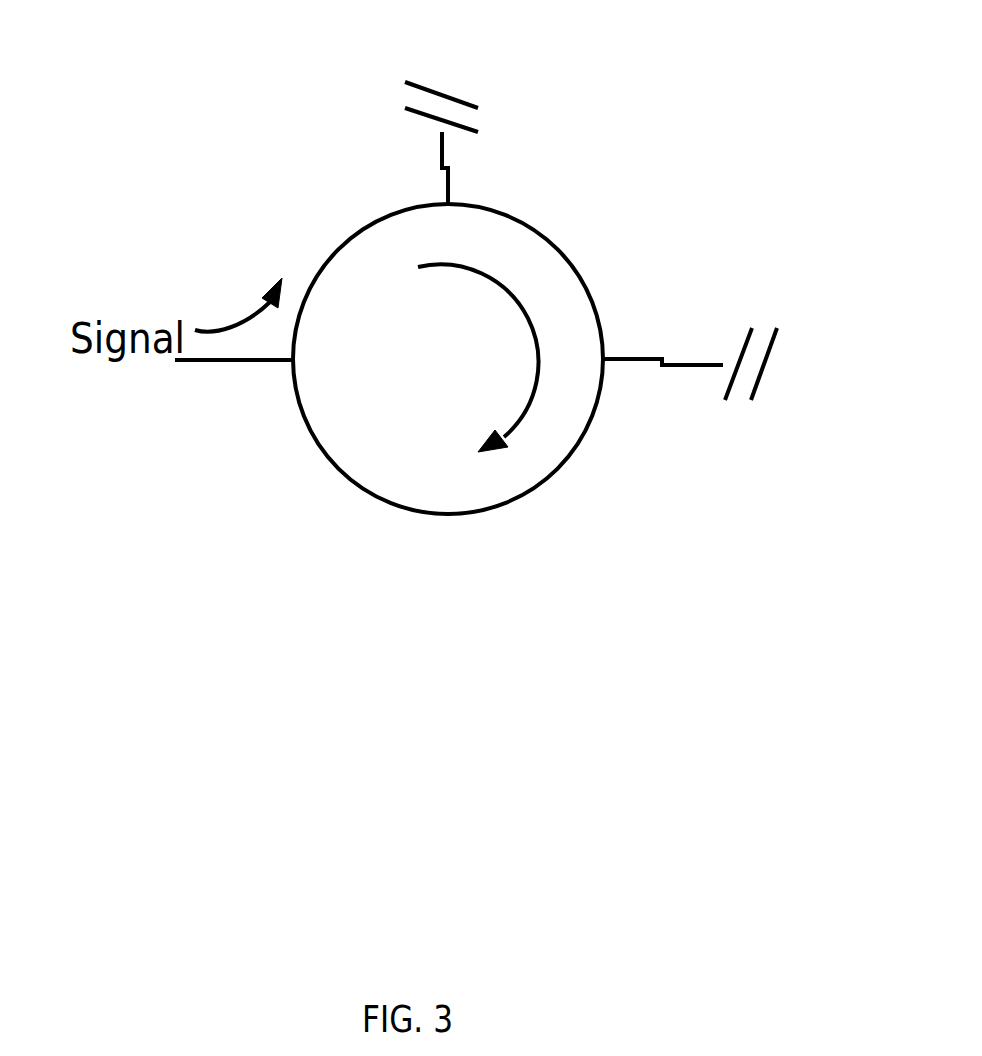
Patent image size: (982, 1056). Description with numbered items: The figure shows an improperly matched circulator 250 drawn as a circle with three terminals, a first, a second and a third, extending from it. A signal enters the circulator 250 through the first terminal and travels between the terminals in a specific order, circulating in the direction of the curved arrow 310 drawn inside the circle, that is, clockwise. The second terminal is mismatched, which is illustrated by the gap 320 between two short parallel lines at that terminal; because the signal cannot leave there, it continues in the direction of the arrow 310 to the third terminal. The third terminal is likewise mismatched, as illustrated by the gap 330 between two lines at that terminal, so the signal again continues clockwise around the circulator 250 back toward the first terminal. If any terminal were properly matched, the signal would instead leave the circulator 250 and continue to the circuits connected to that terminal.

The circulator 250 is at (368, 224).
The arrow 310 is at (522, 296).
The gap 320 is at (484, 120).
The gap 330 is at (763, 320).